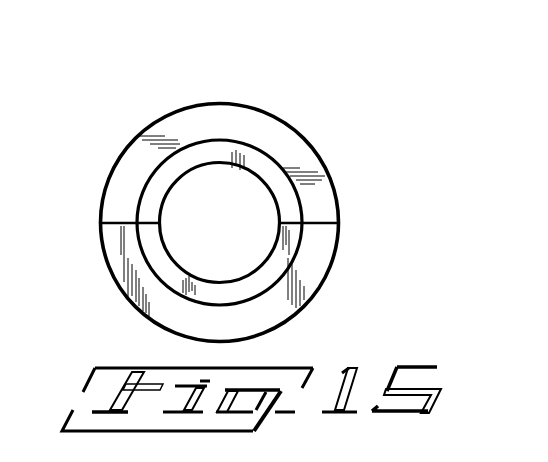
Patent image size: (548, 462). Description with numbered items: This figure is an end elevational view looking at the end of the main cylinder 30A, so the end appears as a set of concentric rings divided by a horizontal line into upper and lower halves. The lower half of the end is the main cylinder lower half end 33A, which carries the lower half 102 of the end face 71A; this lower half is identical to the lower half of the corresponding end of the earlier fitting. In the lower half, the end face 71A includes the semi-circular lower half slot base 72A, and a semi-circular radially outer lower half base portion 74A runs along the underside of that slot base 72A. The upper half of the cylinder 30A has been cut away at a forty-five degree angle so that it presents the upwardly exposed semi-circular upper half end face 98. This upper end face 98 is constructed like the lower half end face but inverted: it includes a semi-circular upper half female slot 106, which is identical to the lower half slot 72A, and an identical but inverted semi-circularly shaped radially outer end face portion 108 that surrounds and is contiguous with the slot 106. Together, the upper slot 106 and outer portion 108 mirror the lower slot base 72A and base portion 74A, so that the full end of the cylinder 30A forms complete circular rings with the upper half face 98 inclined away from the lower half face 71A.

The upper half end face 98 is at (348, 128).
The radially outer end face portion 108 is at (249, 124).
The upper half female slot 106 is at (291, 201).
The lower half of end face 102 is at (92, 263).
The main cylinder 30A is at (362, 225).
The main cylinder lower half end 33A is at (356, 265).
The end face 71A is at (137, 92).
The lower half semi-circular slot 72A is at (278, 265).
The lower half base portion 74A is at (167, 308).